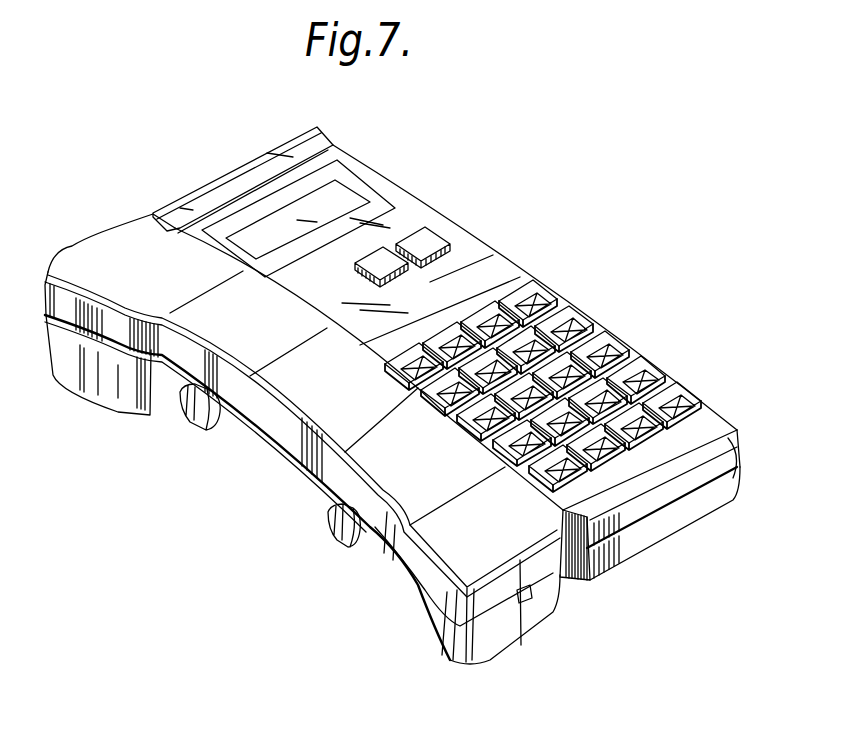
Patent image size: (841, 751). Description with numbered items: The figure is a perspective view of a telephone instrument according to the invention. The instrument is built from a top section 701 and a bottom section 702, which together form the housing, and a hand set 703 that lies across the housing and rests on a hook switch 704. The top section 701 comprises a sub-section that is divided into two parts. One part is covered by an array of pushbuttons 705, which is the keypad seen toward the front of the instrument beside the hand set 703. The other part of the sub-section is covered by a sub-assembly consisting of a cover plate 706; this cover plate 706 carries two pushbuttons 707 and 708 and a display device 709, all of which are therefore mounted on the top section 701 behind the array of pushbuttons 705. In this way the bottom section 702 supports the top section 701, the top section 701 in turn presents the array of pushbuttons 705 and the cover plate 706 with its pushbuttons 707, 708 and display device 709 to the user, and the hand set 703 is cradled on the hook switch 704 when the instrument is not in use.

The top section 701 is at (738, 463).
The bottom section 702 is at (638, 533).
The hand set 703 is at (407, 607).
The hook switch 704 is at (323, 522).
The array of pushbuttons 705 is at (627, 345).
The cover plate 706 is at (415, 218).
The pushbutton 707 is at (390, 268).
The pushbutton 708 is at (433, 238).
The display device 709 is at (347, 200).